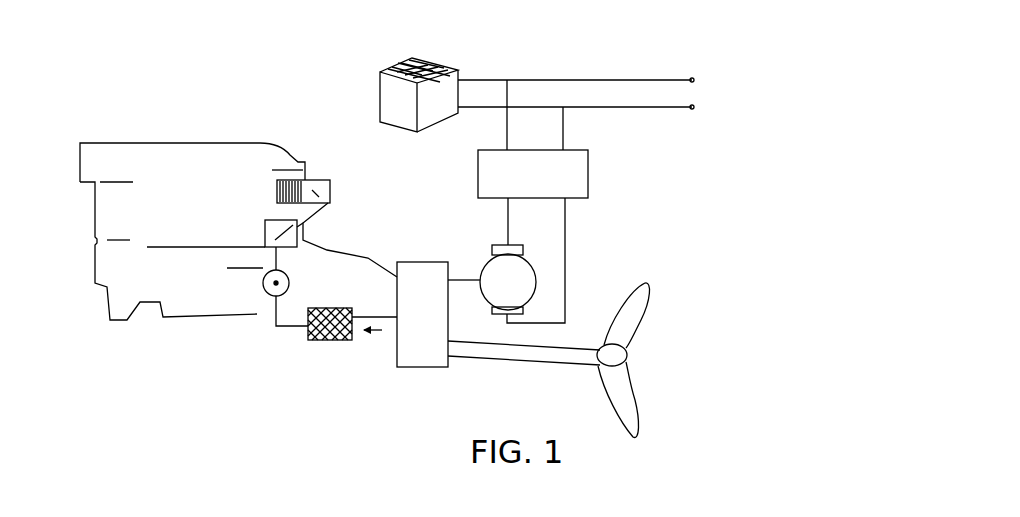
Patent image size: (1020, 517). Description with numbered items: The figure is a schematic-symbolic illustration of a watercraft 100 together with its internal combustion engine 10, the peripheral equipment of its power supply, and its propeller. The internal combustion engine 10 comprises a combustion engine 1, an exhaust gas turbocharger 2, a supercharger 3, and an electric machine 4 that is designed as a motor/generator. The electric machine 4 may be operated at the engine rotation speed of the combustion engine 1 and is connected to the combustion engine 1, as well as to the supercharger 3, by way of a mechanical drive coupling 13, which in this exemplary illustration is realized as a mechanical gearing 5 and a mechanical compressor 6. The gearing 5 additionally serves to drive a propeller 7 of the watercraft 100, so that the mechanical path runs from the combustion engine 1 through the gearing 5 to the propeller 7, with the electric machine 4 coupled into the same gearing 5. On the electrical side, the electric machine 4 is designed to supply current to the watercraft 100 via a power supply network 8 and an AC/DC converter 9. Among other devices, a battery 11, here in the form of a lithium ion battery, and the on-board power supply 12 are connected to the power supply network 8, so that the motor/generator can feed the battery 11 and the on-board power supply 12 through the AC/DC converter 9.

The combustion engine 1 is at (110, 221).
The exhaust gas turbocharger 2 is at (320, 183).
The supercharger 3 is at (305, 227).
The electric machine 4 is at (483, 258).
The mechanical gearing 5 is at (412, 367).
The mechanical compressor 6 is at (327, 342).
The propeller 7 is at (597, 370).
The power supply network 8 is at (567, 240).
The AC/DC converter 9 is at (590, 173).
The internal combustion engine 10 is at (168, 54).
The battery 11 is at (382, 95).
The on-board power supply 12 is at (643, 80).
The mechanical drive coupling 13 is at (379, 379).
The watercraft 100 is at (497, 37).